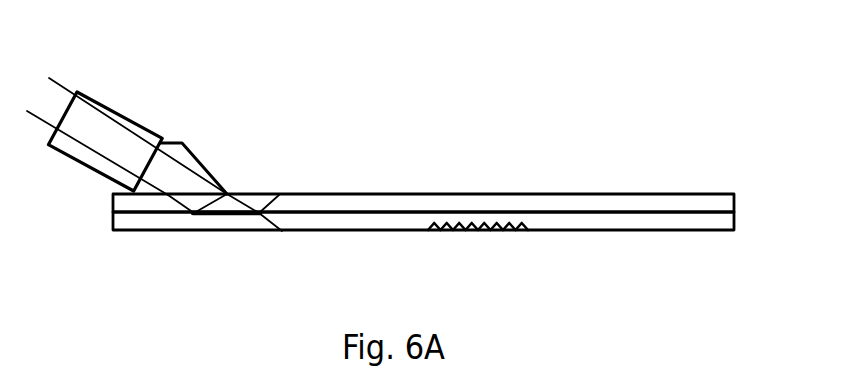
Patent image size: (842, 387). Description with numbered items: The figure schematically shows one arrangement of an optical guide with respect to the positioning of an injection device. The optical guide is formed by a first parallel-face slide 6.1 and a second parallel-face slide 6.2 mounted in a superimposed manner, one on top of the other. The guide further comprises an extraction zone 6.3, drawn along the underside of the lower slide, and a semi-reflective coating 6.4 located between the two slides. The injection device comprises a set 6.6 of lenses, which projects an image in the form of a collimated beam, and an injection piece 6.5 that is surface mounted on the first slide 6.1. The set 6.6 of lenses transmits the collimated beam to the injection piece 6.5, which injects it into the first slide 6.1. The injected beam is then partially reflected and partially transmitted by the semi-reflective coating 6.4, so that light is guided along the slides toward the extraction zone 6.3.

The first parallel-face slide 6.1 is at (658, 199).
The second parallel-face slide 6.2 is at (657, 230).
The extraction zone 6.3 is at (523, 232).
The semi-reflective coating 6.4 is at (225, 215).
The injection piece 6.5 is at (188, 152).
The set of lenses 6.6 is at (127, 121).